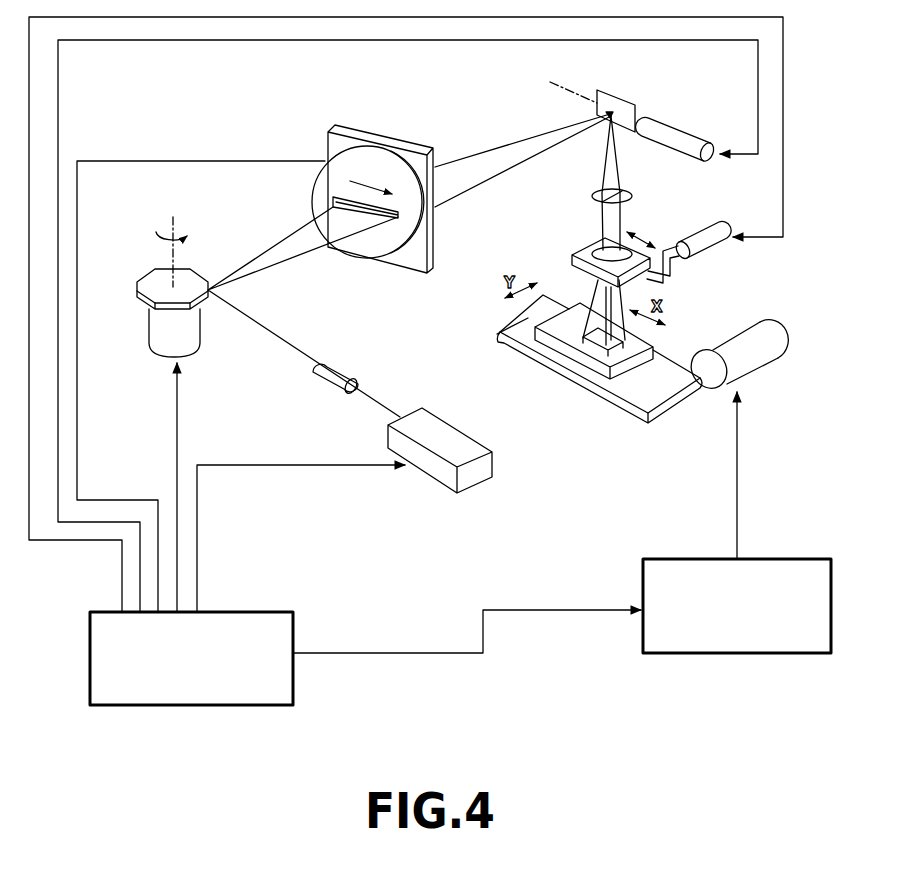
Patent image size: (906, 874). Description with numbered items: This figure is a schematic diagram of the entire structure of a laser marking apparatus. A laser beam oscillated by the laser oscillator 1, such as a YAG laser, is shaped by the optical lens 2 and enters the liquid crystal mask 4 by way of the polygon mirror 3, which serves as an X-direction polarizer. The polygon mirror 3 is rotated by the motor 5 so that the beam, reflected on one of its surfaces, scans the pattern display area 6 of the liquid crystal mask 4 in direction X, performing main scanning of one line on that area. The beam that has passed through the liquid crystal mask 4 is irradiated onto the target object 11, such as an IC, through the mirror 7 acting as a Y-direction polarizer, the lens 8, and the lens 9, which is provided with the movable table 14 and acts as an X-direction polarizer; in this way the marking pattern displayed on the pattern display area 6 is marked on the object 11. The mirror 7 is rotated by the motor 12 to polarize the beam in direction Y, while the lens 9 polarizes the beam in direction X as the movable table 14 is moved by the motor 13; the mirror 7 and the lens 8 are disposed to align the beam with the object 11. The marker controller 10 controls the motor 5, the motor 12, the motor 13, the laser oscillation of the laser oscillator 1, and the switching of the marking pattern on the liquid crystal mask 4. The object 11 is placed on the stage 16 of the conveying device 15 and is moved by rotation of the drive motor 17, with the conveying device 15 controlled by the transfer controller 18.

The laser oscillator 1 is at (477, 437).
The optical lens 2 is at (340, 363).
The polygon mirror 3 is at (190, 270).
The liquid crystal mask 4 is at (400, 131).
The motor 5 is at (193, 340).
The pattern display area 6 is at (355, 210).
The mirror 7 is at (627, 103).
The lens 8 is at (631, 195).
The lens 9 is at (600, 247).
The marker controller 10 is at (255, 610).
The target object 11 is at (653, 347).
The motor 12 is at (688, 128).
The motor 13 is at (717, 227).
The movable table 14 is at (577, 252).
The conveying device 15 is at (507, 355).
The stage 16 is at (618, 400).
The drive motor 17 is at (773, 328).
The transfer controller 18 is at (788, 558).